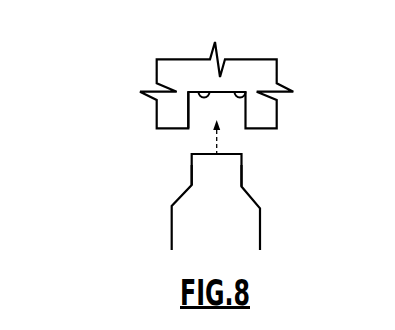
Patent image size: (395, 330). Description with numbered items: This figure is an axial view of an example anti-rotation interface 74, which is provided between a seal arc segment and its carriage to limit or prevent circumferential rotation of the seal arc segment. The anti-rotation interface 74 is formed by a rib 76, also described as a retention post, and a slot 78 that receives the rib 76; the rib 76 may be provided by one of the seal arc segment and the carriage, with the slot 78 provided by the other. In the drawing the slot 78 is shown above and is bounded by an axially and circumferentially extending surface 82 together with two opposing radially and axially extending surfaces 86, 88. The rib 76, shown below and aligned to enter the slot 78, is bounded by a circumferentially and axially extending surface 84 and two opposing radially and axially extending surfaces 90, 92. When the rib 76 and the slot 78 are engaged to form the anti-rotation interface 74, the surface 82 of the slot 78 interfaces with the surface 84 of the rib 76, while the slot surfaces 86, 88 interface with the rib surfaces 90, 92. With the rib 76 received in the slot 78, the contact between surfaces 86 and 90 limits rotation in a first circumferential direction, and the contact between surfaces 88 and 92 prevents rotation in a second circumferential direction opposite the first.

The anti-rotation interface 74 is at (170, 135).
The rib 76 is at (211, 185).
The slot 78 is at (225, 89).
The axially and circumferentially extending surface 82 is at (202, 90).
The circumferentially and axially extending surface 84 is at (232, 154).
The radially and axially extending surface 86 is at (188, 124).
The radially and axially extending surface 88 is at (235, 90).
The radially and axially extending surface 90 is at (191, 182).
The radially and axially extending surface 92 is at (243, 182).